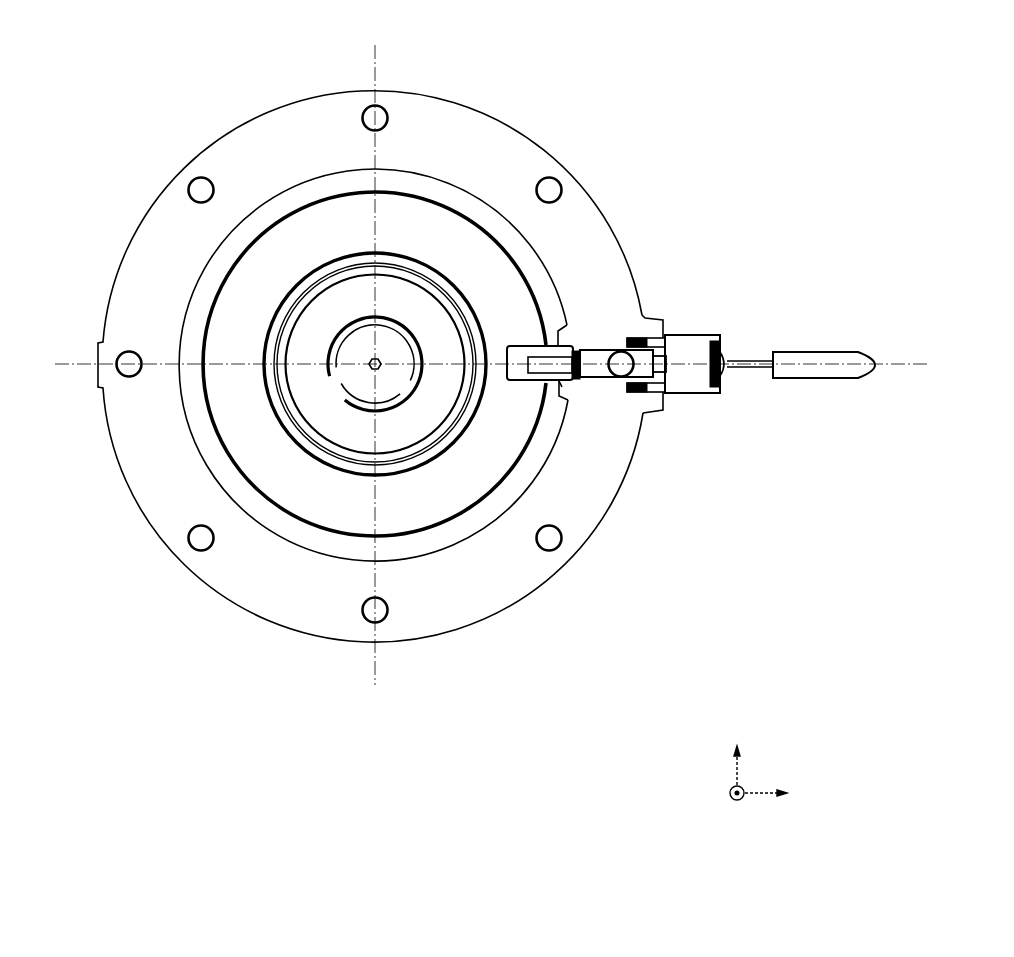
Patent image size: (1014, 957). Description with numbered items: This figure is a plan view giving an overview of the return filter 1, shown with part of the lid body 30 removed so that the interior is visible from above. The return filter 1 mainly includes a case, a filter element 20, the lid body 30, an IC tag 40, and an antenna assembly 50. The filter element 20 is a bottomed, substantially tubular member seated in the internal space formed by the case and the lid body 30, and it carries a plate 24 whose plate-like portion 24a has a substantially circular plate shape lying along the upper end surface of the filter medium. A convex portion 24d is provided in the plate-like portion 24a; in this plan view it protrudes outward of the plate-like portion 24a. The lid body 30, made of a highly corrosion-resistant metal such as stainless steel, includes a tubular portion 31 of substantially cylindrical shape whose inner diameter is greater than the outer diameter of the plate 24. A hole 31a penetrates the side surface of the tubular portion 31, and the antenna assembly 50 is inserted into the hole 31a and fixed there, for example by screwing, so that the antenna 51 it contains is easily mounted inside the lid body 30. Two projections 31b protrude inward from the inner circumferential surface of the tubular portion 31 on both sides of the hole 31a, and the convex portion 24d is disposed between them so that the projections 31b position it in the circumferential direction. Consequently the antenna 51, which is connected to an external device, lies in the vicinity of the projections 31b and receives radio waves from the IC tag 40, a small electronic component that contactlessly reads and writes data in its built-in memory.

The return filter 1 is at (746, 25).
The filter element 20 is at (120, 91).
The plate 24 is at (273, 225).
The plate-like portion 24a is at (457, 230).
The convex portion 24d is at (518, 346).
The lid body 30 is at (606, 629).
The tubular portion 31 is at (530, 568).
The hole 31a is at (660, 322).
The projections 31b is at (585, 347).
The IC tag 40 is at (562, 387).
The antenna assembly 50 is at (702, 382).
The antenna 51 is at (630, 367).